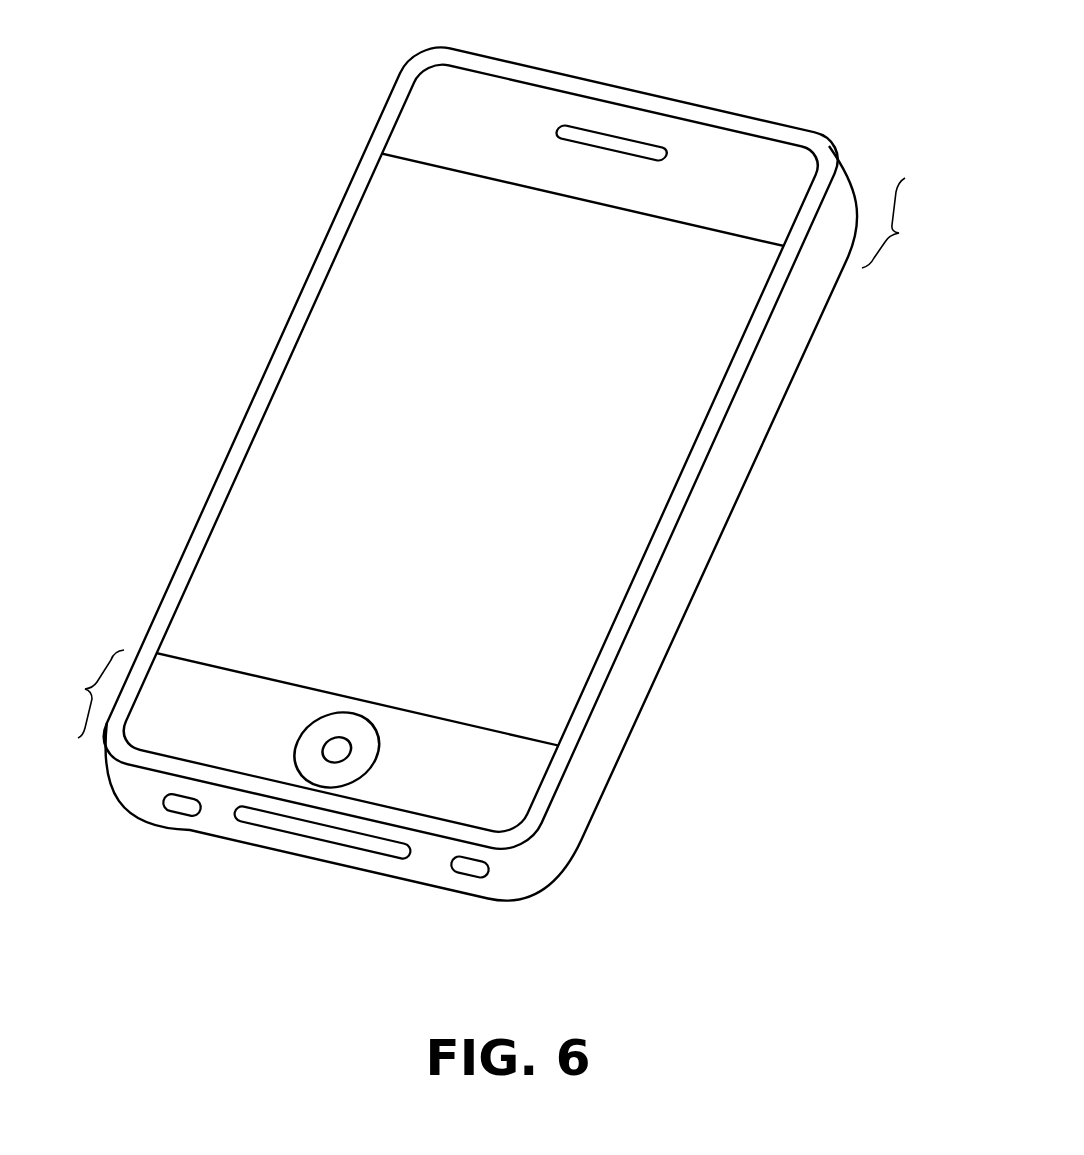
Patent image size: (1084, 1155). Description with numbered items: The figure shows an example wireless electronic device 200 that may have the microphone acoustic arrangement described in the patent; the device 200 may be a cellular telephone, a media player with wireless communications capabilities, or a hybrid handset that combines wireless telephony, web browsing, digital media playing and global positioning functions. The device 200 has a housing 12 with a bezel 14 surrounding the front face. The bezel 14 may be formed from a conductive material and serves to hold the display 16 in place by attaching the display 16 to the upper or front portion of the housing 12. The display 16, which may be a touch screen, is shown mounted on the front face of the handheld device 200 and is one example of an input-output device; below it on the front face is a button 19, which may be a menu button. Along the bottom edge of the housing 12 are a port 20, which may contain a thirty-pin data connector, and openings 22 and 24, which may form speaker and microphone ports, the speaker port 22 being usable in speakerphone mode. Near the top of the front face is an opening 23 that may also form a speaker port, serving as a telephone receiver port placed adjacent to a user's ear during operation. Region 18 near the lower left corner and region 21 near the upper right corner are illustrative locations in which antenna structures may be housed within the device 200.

The wireless electronic device 200 is at (868, 102).
The housing 12 is at (620, 714).
The bezel 14 is at (273, 360).
The display 16 is at (708, 287).
The region 18 is at (87, 694).
The button 19 is at (372, 766).
The port 20 is at (302, 840).
The region 21 is at (896, 223).
The speaker port 22 is at (170, 813).
The speaker port 23 is at (627, 140).
The opening 24 is at (490, 867).